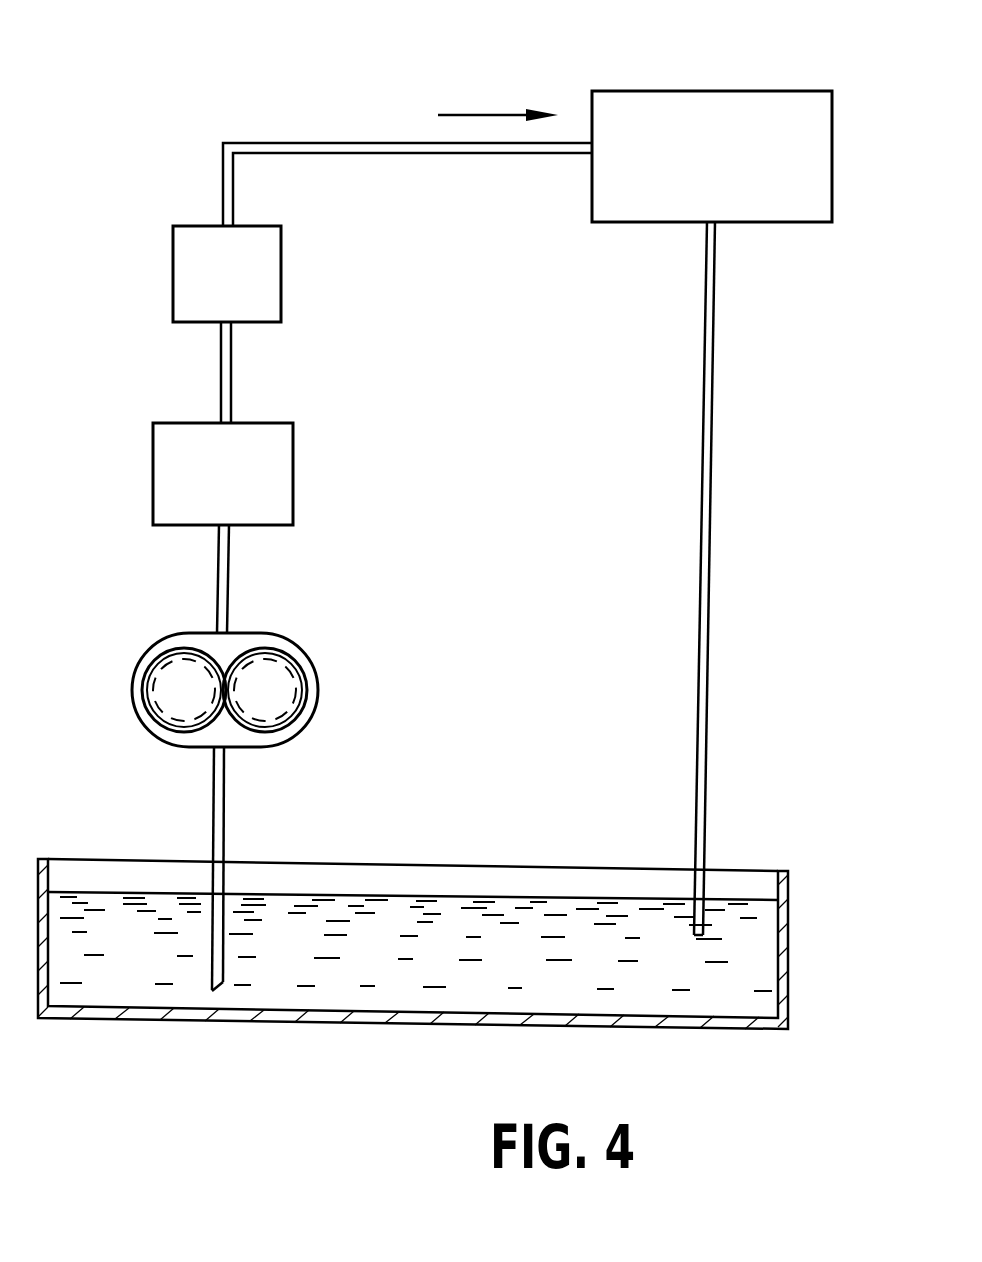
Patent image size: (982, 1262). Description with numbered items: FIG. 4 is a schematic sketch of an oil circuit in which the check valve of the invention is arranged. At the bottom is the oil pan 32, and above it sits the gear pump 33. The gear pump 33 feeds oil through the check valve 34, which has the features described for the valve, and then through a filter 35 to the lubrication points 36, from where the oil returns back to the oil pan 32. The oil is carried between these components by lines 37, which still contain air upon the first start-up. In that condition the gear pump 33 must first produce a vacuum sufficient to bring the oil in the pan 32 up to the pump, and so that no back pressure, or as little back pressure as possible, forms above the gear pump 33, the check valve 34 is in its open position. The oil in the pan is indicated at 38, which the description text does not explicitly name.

The oil pan 32 is at (790, 882).
The gear pump 33 is at (290, 656).
The check valve 34 is at (166, 462).
The filter 35 is at (186, 254).
The lubrication points 36 is at (745, 112).
The lines 37 is at (225, 828).
The liquid 38 is at (497, 930).